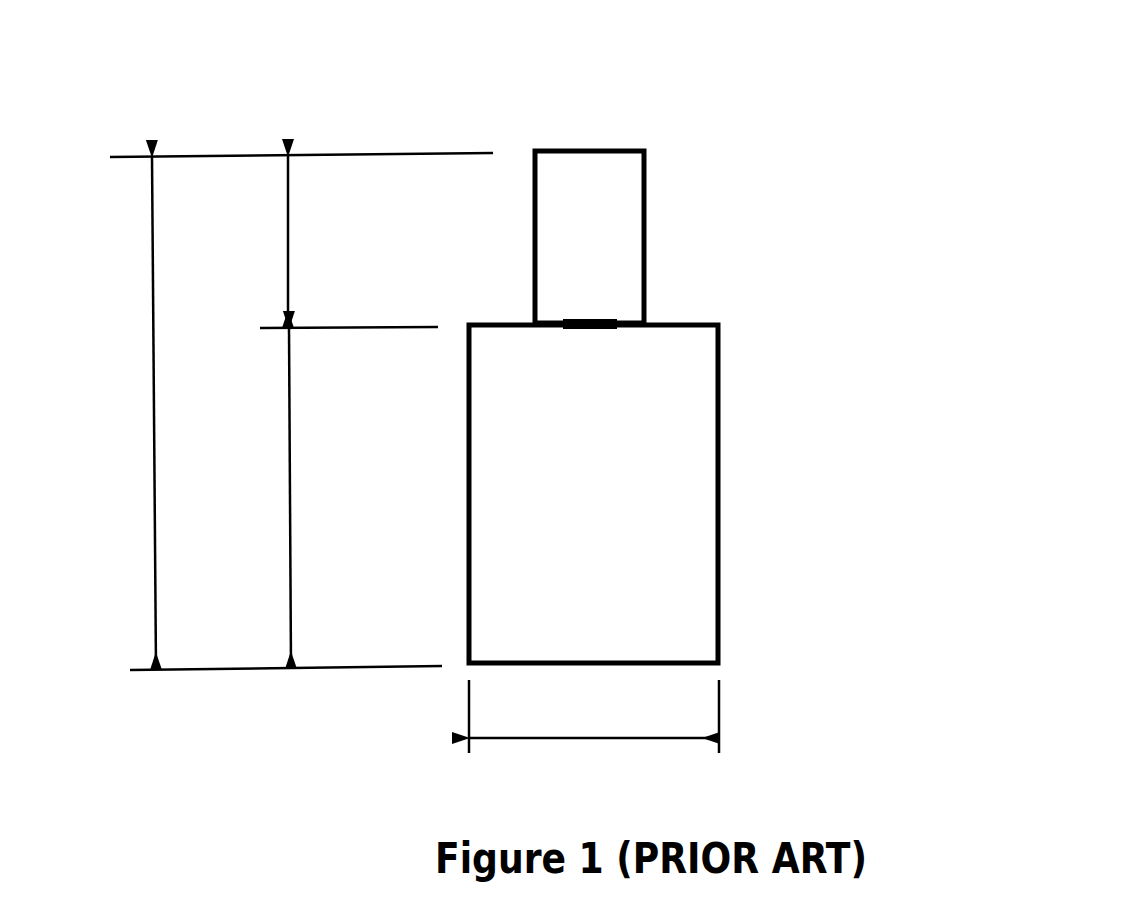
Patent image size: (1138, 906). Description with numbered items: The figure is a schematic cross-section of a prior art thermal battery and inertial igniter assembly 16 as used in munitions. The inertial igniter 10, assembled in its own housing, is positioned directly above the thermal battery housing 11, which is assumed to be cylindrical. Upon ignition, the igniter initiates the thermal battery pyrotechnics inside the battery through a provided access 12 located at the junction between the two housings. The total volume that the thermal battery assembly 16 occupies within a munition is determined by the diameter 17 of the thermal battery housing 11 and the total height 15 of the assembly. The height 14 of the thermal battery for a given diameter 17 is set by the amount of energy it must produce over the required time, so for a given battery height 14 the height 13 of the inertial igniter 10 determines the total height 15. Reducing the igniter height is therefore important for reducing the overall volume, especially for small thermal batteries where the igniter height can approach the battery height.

The inertial igniter 10 is at (660, 177).
The thermal battery housing 11 is at (720, 487).
The access 12 is at (607, 311).
The height of the inertial igniter 13 is at (254, 241).
The height of the thermal battery 14 is at (257, 498).
The total height of the thermal battery assembly 15 is at (122, 413).
The thermal battery assembly 16 is at (947, 145).
The diameter of the thermal battery housing 17 is at (594, 732).